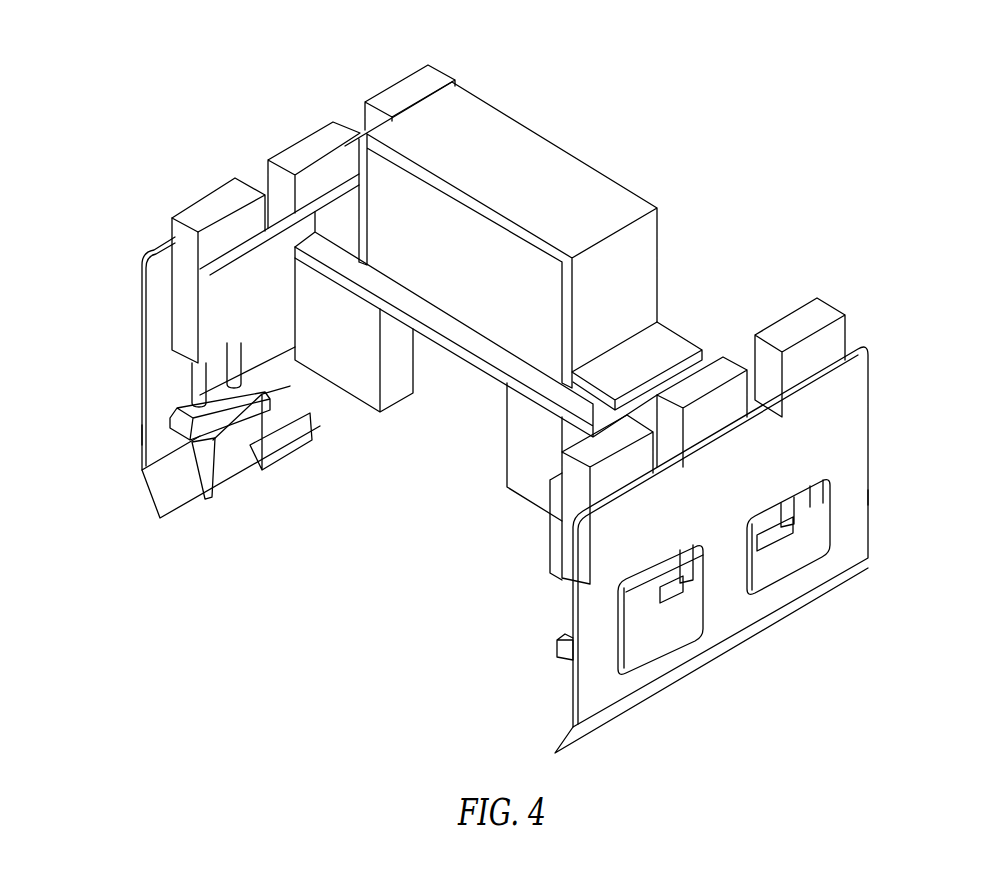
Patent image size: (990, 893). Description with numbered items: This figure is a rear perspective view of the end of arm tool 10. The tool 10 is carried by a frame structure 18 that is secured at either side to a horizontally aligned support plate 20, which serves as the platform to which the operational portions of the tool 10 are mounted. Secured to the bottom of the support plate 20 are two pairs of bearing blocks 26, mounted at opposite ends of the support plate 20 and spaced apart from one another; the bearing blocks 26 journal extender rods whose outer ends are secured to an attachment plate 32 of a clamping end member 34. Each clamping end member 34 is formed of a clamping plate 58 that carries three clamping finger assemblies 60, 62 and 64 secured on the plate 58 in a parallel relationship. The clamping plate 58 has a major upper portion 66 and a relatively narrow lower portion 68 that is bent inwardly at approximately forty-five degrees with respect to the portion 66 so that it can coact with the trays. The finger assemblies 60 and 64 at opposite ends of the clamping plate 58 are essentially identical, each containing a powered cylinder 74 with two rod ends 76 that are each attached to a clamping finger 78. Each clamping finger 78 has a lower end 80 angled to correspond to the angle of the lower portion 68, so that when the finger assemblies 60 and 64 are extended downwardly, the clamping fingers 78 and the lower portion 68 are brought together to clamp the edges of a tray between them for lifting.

The tool 10 is at (383, 627).
The frame structure 18 is at (645, 210).
The support plate 20 is at (490, 345).
The bearing blocks 26 is at (345, 350).
The attachment plate 32 is at (222, 297).
The clamping end member 34 is at (142, 433).
The clamping plate 58 is at (168, 368).
The clamping finger assembly 60 is at (353, 375).
The clamping finger assembly 62 is at (300, 135).
The clamping finger assembly 64 is at (398, 78).
The major upper portion 66 is at (158, 292).
The lower portion 68 is at (168, 492).
The powered cylinder 74 is at (183, 238).
The rod ends 76 is at (233, 380).
The clamping finger 78 is at (230, 432).
The lower end 80 is at (225, 485).